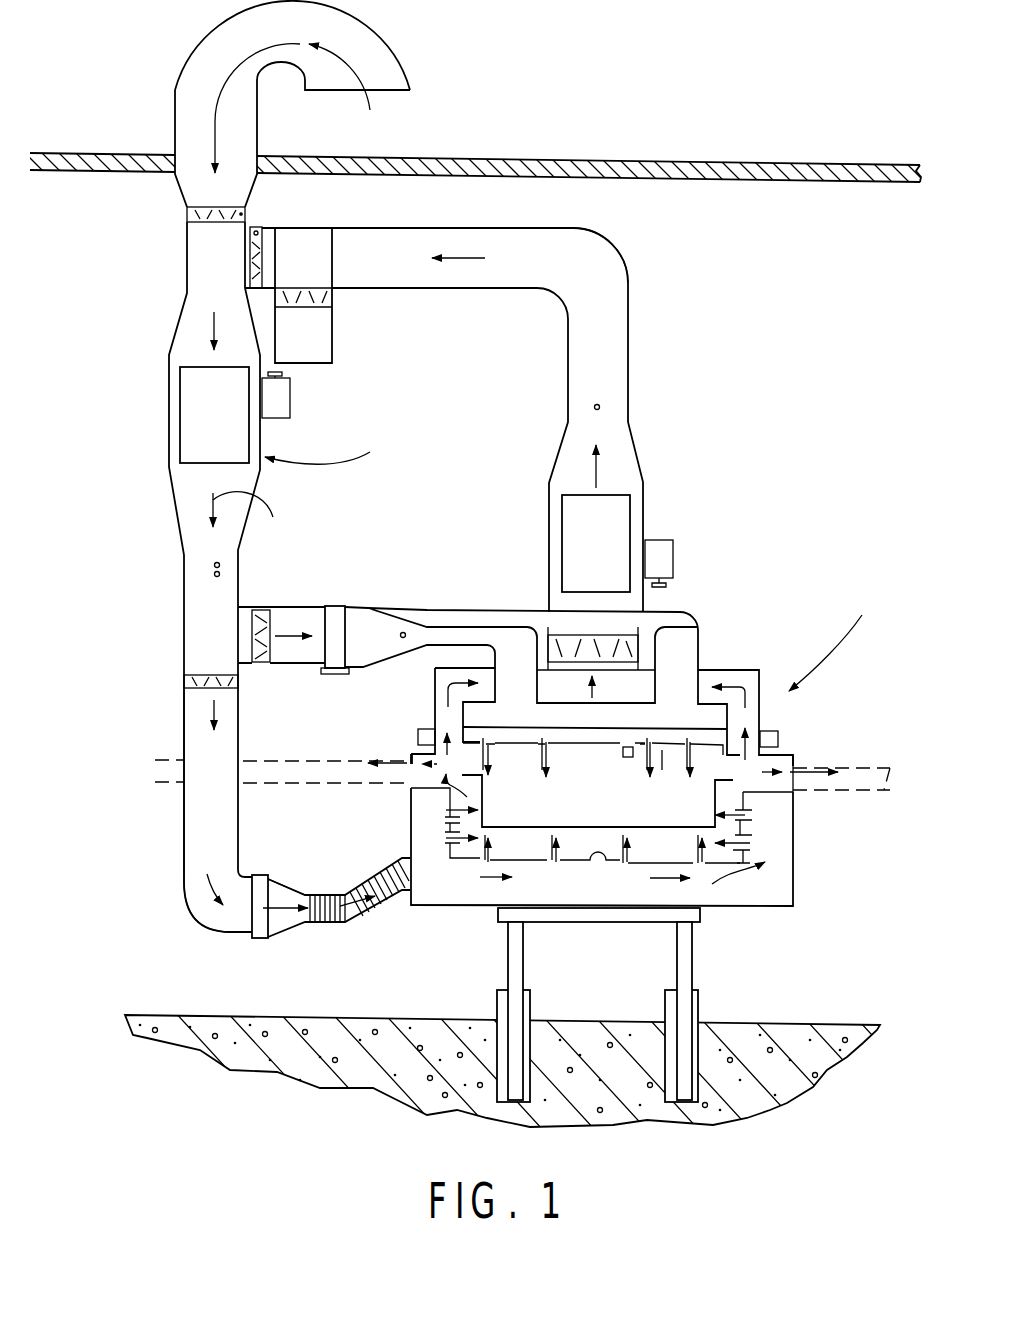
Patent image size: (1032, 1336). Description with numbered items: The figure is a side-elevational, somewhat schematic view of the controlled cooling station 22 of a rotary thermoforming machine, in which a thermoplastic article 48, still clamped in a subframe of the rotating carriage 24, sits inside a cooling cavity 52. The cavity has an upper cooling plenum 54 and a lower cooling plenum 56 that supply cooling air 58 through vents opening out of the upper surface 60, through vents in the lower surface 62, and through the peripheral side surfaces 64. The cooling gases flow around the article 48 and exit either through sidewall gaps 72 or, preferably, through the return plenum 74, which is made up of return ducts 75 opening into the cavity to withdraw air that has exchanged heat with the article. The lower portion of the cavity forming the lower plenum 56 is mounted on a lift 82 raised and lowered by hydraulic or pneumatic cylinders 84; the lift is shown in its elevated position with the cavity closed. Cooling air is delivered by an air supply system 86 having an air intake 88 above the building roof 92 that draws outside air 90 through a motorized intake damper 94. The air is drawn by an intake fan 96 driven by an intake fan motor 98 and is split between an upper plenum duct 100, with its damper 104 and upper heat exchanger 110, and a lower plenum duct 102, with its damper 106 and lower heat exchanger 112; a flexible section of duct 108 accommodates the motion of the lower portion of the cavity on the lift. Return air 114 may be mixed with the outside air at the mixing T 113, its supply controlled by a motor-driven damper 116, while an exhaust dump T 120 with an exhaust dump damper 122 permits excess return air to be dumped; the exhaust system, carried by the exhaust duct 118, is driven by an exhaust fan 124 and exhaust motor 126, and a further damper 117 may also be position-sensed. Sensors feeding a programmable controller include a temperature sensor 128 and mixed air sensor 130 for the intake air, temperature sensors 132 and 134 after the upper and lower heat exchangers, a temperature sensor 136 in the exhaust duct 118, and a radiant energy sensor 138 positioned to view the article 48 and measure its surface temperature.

The controlled cooling station 22 is at (840, 643).
The carriage 24 is at (283, 760).
The thermoplastic article 48 is at (612, 827).
The cooling cavity 52 is at (795, 840).
The upper cooling plenum 54 is at (712, 700).
The lower cooling plenum 56 is at (797, 893).
The cooling air 58 is at (547, 758).
The upper surface 60 is at (662, 750).
The lower surface 62 is at (610, 868).
The peripheral side surfaces 64 is at (445, 820).
The sidewall gaps 72 is at (800, 777).
The return plenum 74 is at (460, 668).
The return ducts 75 is at (435, 702).
The lift 82 is at (617, 923).
The cylinders 84 is at (700, 1005).
The air supply system 86 is at (325, 444).
The air intake 88 is at (408, 92).
The outside air 90 is at (347, 63).
The building roof 92 is at (604, 159).
The motorized intake damper 94 is at (247, 217).
The intake fan 96 is at (180, 425).
The intake fan motor 98 is at (290, 408).
The upper plenum duct 100 is at (308, 607).
The lower plenum duct 102 is at (206, 932).
The damper 104 is at (258, 607).
The damper 106 is at (185, 680).
The flexible section of duct 108 is at (340, 922).
The upper heat exchanger 110 is at (343, 607).
The lower heat exchanger 112 is at (260, 938).
The mixing T 113 is at (185, 265).
The return air 114 is at (482, 258).
The motor-driven damper 116 is at (262, 228).
The damper 117 is at (643, 670).
The exhaust duct 118 is at (630, 297).
The exhaust dump T 120 is at (333, 353).
The exhaust dump damper 122 is at (333, 292).
The exhaust fan 124 is at (630, 527).
The exhaust motor 126 is at (673, 553).
The temperature sensor 128 is at (215, 563).
The mixed air sensor 130 is at (215, 576).
The temperature sensor 132 is at (403, 638).
The temperature sensor 134 is at (291, 897).
The temperature sensor 136 is at (598, 405).
The radiant energy sensor 138 is at (628, 757).